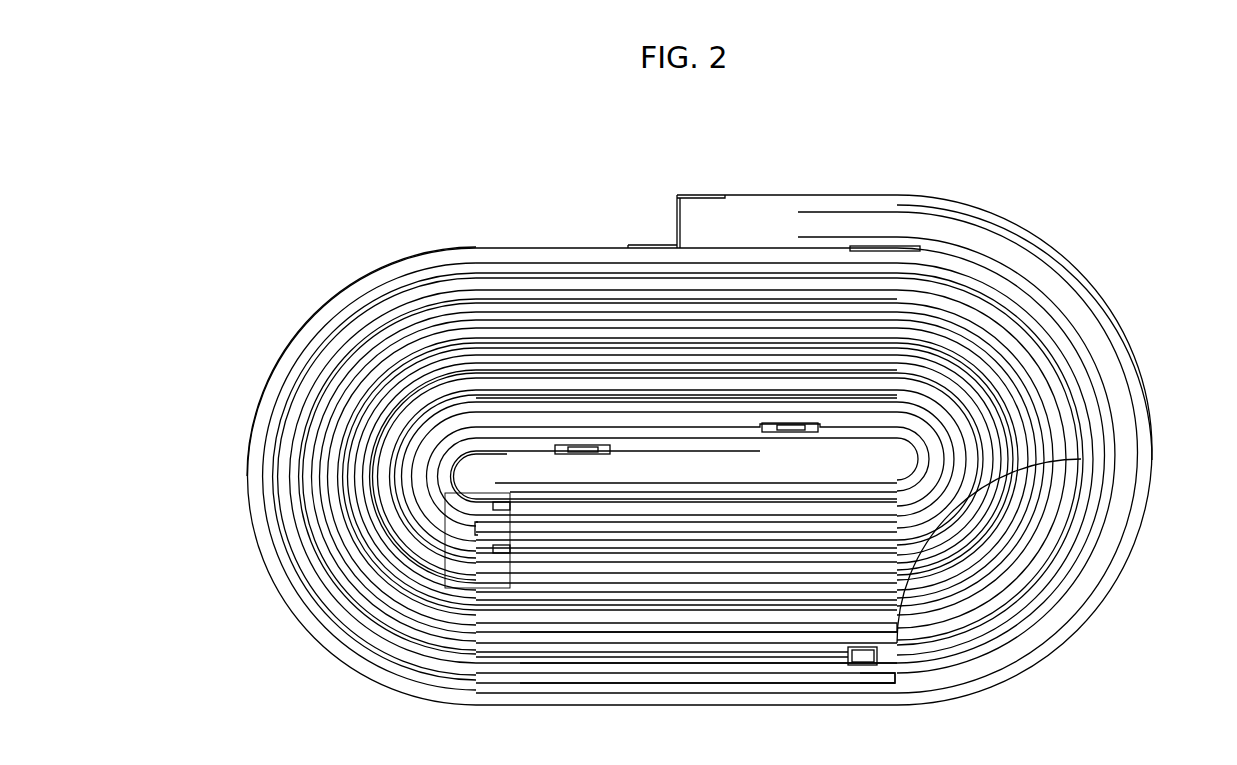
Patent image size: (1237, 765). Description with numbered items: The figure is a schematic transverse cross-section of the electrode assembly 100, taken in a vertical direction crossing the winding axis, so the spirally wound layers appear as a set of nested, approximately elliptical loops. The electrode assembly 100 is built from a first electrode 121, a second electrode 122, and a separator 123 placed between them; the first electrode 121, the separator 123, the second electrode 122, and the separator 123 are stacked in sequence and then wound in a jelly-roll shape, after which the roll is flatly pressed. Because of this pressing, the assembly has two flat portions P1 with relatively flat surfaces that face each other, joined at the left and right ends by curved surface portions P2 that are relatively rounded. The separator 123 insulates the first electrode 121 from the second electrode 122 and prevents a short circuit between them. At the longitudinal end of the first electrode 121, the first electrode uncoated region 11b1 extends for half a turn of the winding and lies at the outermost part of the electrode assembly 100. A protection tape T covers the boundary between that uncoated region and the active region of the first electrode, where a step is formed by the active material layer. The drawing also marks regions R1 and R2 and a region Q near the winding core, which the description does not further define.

The electrode assembly 100 is at (692, 113).
The flat portion P1 is at (505, 232).
The curved surface portion P2 is at (1150, 530).
The protection tape T is at (880, 246).
The first electrode uncoated region 11b1 is at (1022, 625).
The first region R1 is at (880, 663).
The second region R2 is at (900, 688).
The winding core region Q is at (480, 590).
The first electrode 121 is at (605, 633).
The second electrode 122 is at (648, 685).
The separator 123 is at (725, 665).